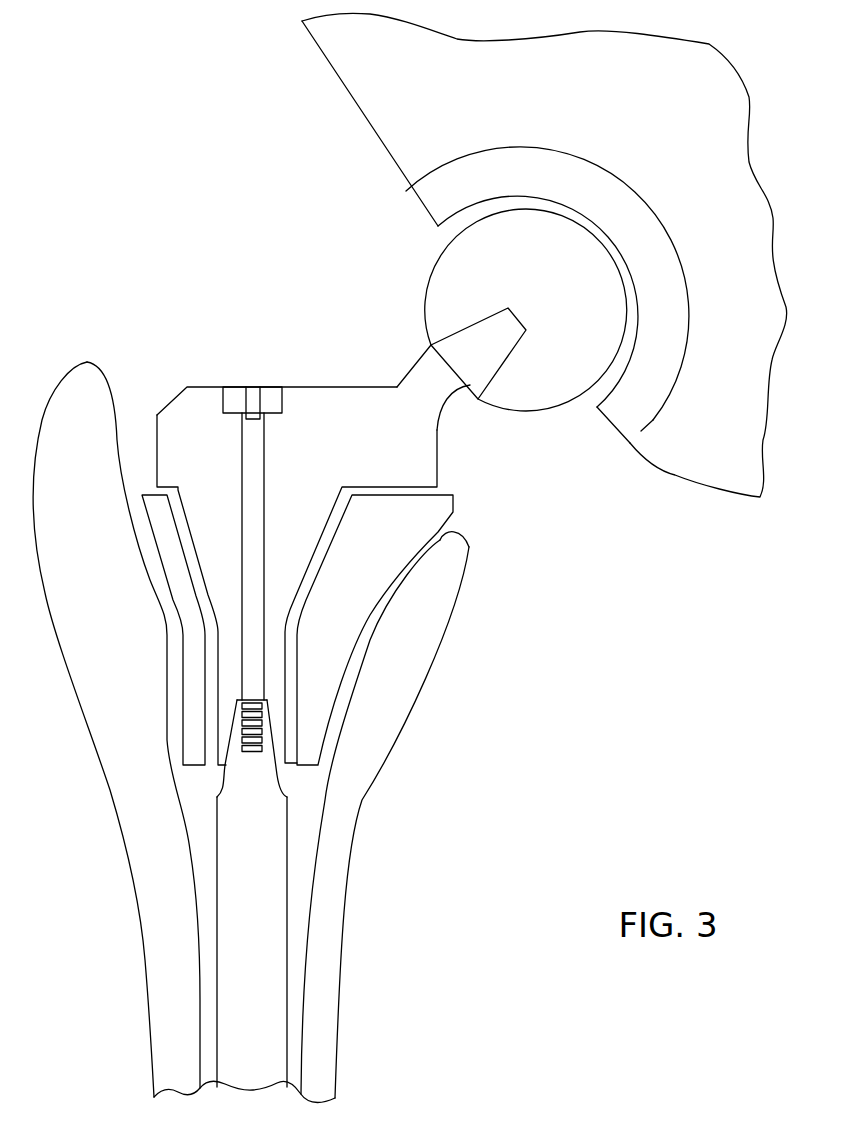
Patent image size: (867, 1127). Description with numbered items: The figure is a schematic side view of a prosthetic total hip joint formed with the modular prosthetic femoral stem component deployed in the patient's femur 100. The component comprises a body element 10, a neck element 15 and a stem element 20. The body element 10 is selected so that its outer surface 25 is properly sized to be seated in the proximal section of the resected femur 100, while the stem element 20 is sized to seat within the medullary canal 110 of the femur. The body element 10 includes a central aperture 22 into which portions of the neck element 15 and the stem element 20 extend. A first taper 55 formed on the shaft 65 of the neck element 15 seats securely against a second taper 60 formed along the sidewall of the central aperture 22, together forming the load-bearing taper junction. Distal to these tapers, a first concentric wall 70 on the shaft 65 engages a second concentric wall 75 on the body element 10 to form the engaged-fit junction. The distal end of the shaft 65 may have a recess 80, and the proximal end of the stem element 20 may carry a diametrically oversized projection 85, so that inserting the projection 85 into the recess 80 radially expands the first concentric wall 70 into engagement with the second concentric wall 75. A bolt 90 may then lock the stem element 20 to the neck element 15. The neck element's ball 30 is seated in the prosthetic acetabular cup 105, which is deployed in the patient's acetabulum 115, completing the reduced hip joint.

The body element 10 is at (469, 512).
The neck element 15 is at (454, 455).
The stem element 20 is at (303, 933).
The central aperture 22 is at (203, 780).
The outer surface 25 is at (432, 542).
The ball 30 is at (414, 297).
The first taper 55 is at (320, 547).
The second taper 60 is at (302, 600).
The shaft 65 is at (278, 675).
The first concentric wall 70 is at (217, 648).
The second concentric wall 75 is at (203, 724).
The recess 80 is at (272, 747).
The projection 85 is at (253, 770).
The bolt 90 is at (238, 373).
The femur 100 is at (372, 850).
The acetabular cup 105 is at (406, 214).
The medullary canal 110 is at (308, 1058).
The acetabulum 115 is at (338, 107).